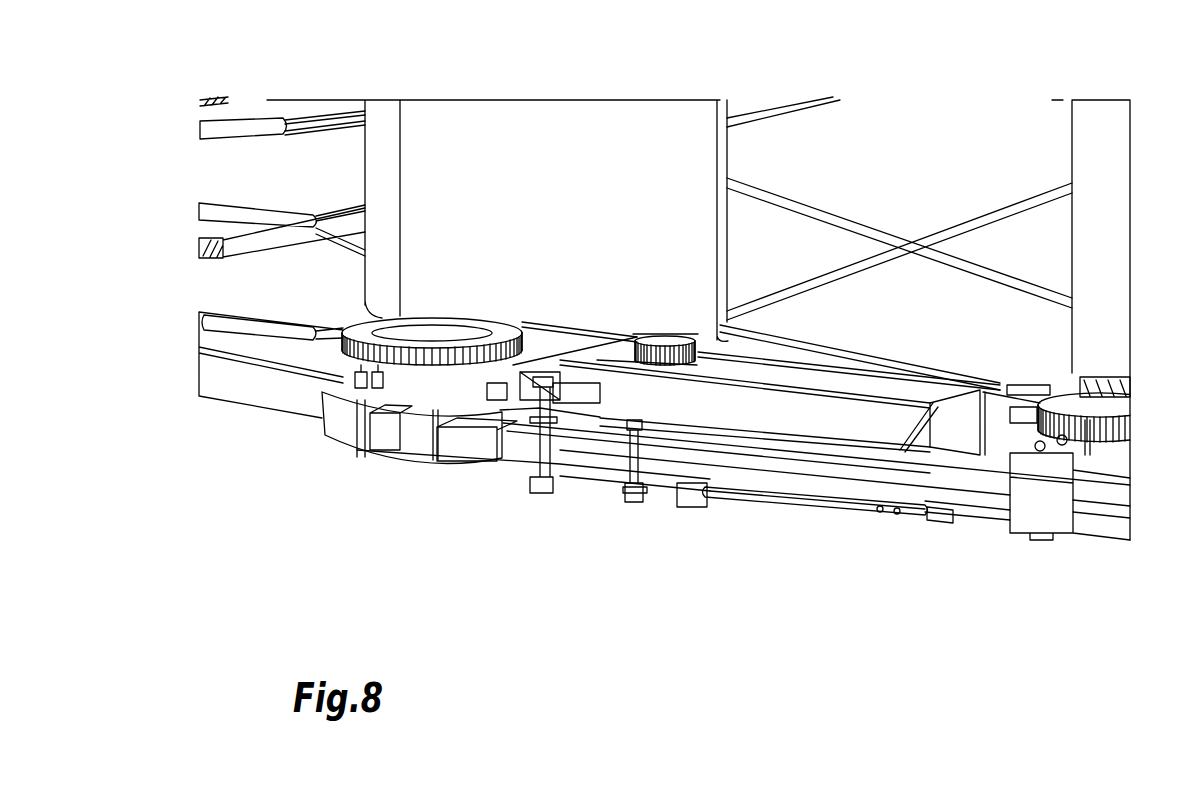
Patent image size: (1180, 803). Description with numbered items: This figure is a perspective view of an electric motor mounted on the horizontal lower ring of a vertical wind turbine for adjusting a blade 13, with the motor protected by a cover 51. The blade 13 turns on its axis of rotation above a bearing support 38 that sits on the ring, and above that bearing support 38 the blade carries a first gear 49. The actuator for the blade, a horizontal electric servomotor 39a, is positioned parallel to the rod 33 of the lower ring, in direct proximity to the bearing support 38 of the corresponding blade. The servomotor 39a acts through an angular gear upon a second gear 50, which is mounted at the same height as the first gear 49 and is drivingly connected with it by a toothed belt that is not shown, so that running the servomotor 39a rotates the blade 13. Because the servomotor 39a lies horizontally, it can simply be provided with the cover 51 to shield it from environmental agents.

The blade 13 is at (601, 108).
The second gear 50 is at (683, 338).
The cover 51 is at (863, 378).
The first gear 49 is at (367, 320).
The bearing support 38 is at (463, 436).
The servomotor 39a is at (803, 510).
The rod 33 is at (952, 485).